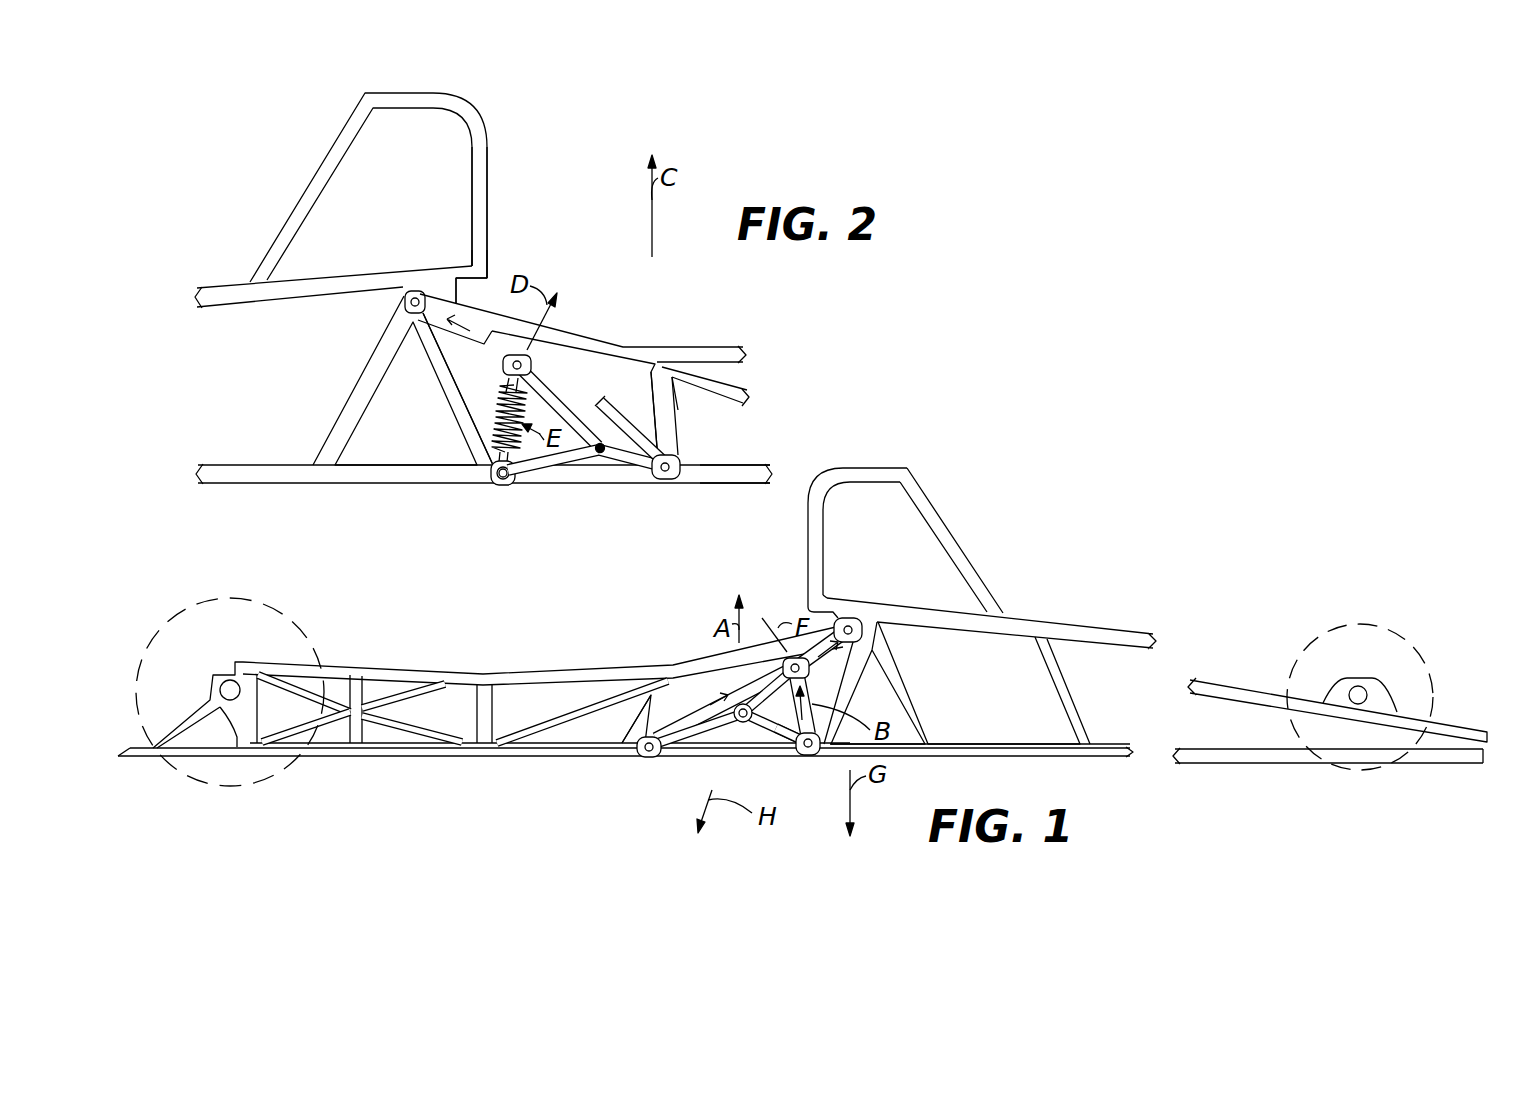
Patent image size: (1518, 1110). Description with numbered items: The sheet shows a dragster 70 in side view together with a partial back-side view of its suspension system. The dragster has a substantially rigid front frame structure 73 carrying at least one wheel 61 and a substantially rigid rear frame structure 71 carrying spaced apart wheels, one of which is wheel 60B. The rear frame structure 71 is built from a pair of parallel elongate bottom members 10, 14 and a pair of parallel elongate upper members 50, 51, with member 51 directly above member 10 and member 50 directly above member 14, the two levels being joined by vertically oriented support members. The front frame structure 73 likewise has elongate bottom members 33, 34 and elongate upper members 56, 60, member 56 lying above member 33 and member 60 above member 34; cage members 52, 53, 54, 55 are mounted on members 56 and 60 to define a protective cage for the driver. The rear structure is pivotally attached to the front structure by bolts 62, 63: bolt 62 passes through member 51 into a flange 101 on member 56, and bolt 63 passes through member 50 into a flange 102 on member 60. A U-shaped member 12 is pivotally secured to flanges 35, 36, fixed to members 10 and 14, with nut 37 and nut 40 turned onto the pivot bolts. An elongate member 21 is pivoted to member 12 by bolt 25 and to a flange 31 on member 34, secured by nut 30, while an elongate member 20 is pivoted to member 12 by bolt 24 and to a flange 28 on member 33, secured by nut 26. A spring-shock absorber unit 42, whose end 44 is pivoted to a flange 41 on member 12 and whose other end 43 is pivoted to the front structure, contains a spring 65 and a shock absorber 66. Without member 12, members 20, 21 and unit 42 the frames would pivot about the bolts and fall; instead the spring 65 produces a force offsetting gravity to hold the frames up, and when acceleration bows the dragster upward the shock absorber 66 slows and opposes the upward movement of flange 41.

In FIG. 1, the elongate bottom member 10 is at (440, 755).
In FIG. 2, the U-shaped member 12 is at (549, 390).
In FIG. 1, the U-shaped member 12 is at (677, 742).
In FIG. 2, the elongate bottom member 14 is at (742, 478).
In FIG. 1, the elongate member 20 is at (762, 723).
In FIG. 2, the elongate member 21 is at (548, 470).
In FIG. 1, the bolt 24 is at (733, 718).
In FIG. 2, the bolt 25 is at (600, 460).
In FIG. 1, the nut 26 is at (800, 748).
In FIG. 1, the flange 28 is at (812, 754).
In FIG. 2, the nut 30 is at (505, 486).
In FIG. 2, the flange 31 is at (493, 478).
In FIG. 1, the elongate bottom member 33 is at (1053, 750).
In FIG. 2, the elongate bottom member 34 is at (305, 465).
In FIG. 1, the flange 35 is at (637, 748).
In FIG. 2, the flange 36 is at (680, 478).
In FIG. 1, the nut 37 is at (654, 752).
In FIG. 2, the nut 40 is at (665, 480).
In FIG. 2, the flange 41 is at (506, 322).
In FIG. 1, the flange 41 is at (723, 704).
In FIG. 2, the spring-shock absorber unit 42 is at (480, 405).
In FIG. 1, the spring-shock absorber unit 42 is at (822, 686).
In FIG. 1, the end flange of unit 43 is at (769, 703).
In FIG. 2, the end flange of unit 44 is at (503, 366).
In FIG. 1, the end flange of unit 44 is at (808, 668).
In FIG. 2, the elongate upper member 50 is at (606, 340).
In FIG. 1, the elongate upper member 51 is at (415, 676).
In FIG. 2, the cage member 52 is at (473, 178).
In FIG. 2, the cage member 53 is at (304, 197).
In FIG. 1, the cage member 54 is at (822, 509).
In FIG. 1, the cage member 55 is at (955, 567).
In FIG. 1, the elongate upper member 56 is at (1090, 633).
In FIG. 2, the elongate upper member 60 is at (222, 290).
In FIG. 1, the wheel 60B is at (270, 601).
In FIG. 1, the wheel 61 is at (1338, 625).
In FIG. 1, the bolt 62 is at (850, 617).
In FIG. 2, the bolt 63 is at (401, 302).
In FIG. 2, the spring 65 is at (486, 425).
In FIG. 2, the shock absorber 66 is at (464, 452).
In FIG. 1, the dragster 70 is at (1074, 516).
In FIG. 1, the rear frame structure 71 is at (541, 632).
In FIG. 1, the front frame structure 73 is at (1168, 602).
In FIG. 1, the flange 101 is at (866, 625).
In FIG. 2, the flange 102 is at (445, 263).